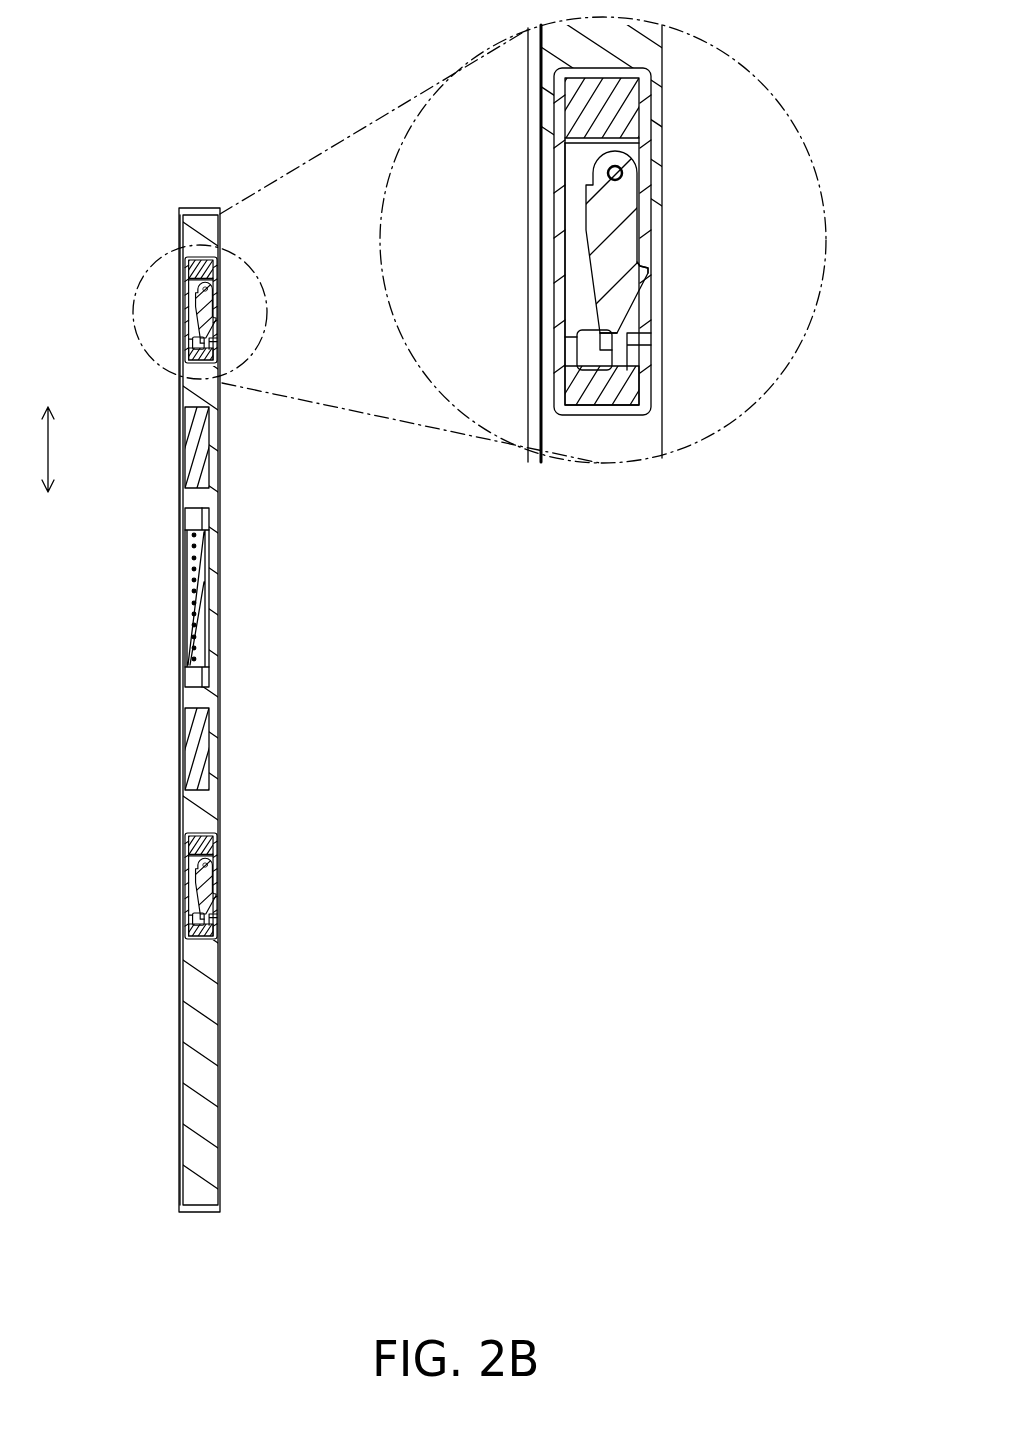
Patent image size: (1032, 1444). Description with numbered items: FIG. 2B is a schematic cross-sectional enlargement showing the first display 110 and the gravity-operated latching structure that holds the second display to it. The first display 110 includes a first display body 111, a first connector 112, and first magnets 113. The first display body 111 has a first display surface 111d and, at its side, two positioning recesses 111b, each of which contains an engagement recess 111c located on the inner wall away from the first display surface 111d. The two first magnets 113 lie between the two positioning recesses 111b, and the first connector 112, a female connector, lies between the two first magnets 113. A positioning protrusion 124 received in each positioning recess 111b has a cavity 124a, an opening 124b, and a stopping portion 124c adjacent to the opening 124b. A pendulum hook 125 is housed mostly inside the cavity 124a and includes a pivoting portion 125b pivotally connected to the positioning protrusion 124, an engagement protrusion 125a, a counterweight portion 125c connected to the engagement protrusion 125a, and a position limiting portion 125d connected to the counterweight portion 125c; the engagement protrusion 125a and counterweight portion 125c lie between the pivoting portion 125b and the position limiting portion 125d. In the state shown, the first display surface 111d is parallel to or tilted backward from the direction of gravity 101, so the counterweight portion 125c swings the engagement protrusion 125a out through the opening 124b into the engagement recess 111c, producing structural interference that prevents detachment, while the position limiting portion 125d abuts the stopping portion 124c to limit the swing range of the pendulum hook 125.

The direction of gravity 101 is at (48, 450).
The first display 110 is at (136, 1165).
The first display body 111 is at (208, 1160).
The positioning recess 111b is at (560, 178).
The engagement recess 111c is at (650, 338).
The first display surface 111d is at (174, 1037).
The first connector 112 is at (198, 576).
The first magnet 113 is at (194, 460).
The positioning protrusion 124 is at (620, 100).
The cavity 124a is at (573, 237).
The opening 124b is at (634, 338).
The stopping portion 124c is at (647, 367).
The pendulum hook 125 is at (627, 203).
The engagement protrusion 125a is at (644, 278).
The pivoting portion 125b is at (623, 163).
The counterweight portion 125c is at (610, 308).
The position limiting portion 125d is at (618, 355).